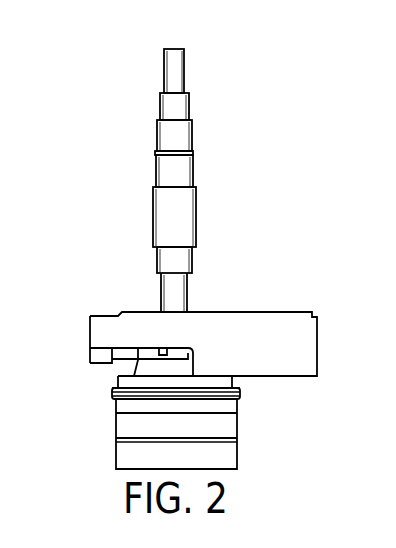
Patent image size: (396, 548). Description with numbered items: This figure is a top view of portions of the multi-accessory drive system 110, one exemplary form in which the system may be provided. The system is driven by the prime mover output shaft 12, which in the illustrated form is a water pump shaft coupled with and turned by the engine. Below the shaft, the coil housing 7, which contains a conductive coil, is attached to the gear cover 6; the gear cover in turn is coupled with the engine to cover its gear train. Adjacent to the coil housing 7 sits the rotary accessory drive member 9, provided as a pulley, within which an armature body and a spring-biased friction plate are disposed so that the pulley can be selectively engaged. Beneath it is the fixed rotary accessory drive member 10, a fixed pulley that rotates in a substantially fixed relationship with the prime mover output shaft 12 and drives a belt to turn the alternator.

The prime mover output shaft 12 is at (194, 63).
The multi-accessory drive system 110 is at (118, 251).
The gear cover 6 is at (258, 301).
The coil housing 7 is at (105, 382).
The rotary accessory drive member 9 is at (250, 413).
The fixed rotary accessory drive member 10 is at (250, 450).